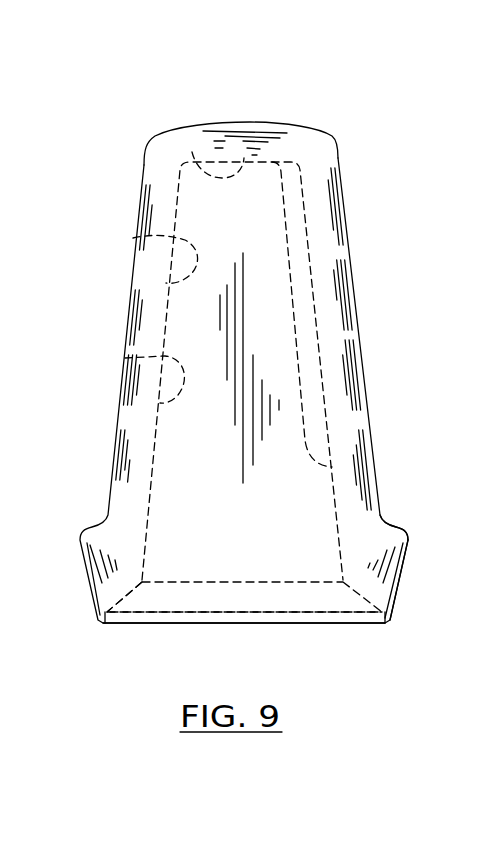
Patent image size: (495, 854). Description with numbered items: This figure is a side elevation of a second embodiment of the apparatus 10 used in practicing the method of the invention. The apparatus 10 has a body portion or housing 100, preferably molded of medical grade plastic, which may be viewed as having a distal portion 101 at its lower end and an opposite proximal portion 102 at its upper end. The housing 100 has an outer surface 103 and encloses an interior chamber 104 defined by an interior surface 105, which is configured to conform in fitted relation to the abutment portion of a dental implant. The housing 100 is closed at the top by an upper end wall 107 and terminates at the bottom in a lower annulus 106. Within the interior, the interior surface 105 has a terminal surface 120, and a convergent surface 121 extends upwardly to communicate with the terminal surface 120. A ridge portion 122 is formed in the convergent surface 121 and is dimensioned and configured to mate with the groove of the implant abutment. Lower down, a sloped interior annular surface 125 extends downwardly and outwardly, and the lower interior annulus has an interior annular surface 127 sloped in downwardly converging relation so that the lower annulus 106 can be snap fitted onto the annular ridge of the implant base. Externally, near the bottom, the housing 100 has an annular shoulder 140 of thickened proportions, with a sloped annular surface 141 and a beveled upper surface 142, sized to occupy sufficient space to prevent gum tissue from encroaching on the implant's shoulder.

The apparatus 10 is at (348, 248).
The housing 100 is at (353, 292).
The distal portion 101 is at (85, 560).
The proximal portion 102 is at (143, 165).
The outer surface 103 is at (362, 382).
The interior chamber 104 is at (213, 442).
The interior surface 105 is at (122, 358).
The lower annulus 106 is at (357, 623).
The upper end wall 107 is at (252, 124).
The terminal surface 120 is at (192, 152).
The convergent surface 121 is at (130, 240).
The ridge portion 122 is at (287, 208).
The sloped interior annular surface 125 is at (235, 592).
The interior annular surface 127 is at (138, 613).
The annular shoulder 140 is at (405, 553).
The sloped annular surface 141 is at (398, 585).
The beveled upper surface 142 is at (385, 522).